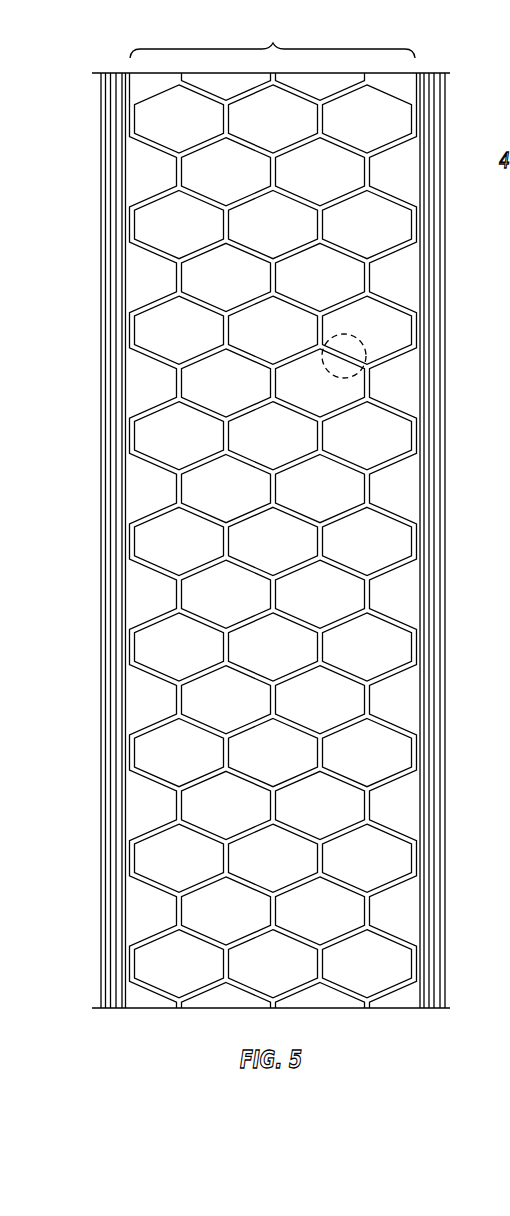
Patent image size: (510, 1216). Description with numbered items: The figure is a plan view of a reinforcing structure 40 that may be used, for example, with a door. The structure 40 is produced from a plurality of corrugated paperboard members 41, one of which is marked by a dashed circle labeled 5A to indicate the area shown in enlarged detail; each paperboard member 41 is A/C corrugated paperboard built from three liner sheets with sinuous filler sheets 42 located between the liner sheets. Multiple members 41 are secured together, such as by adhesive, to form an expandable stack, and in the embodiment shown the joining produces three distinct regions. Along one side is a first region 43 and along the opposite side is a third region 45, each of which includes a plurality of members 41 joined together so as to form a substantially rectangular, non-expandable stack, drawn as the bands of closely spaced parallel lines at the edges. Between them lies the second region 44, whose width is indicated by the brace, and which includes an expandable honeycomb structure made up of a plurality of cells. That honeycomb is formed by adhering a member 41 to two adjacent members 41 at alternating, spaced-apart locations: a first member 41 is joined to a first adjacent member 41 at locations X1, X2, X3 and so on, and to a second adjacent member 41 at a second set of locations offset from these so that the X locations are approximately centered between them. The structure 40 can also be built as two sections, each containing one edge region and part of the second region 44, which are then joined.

The reinforcing structure 40 is at (77, 519).
The corrugated paperboard member 41 is at (217, 438).
The hexagonal cell strut / wall 42 is at (217, 544).
The first region 43 is at (96, 115).
The second region 44 is at (272, 32).
The third region 45 is at (441, 855).
The joining location X1 is at (281, 490).
The joining location X2 is at (281, 595).
The joining location X3 is at (281, 700).
The detail view of paperboard member 5A is at (358, 340).